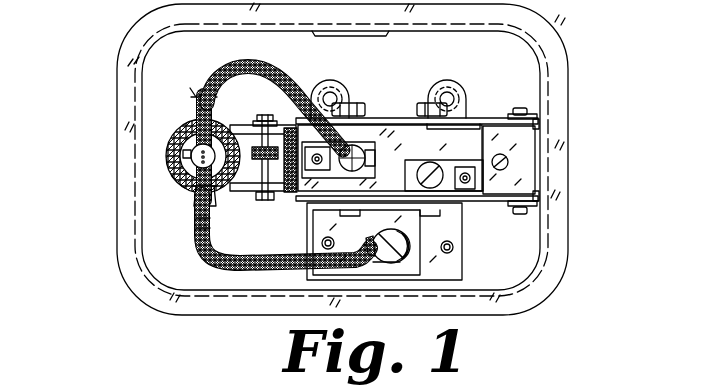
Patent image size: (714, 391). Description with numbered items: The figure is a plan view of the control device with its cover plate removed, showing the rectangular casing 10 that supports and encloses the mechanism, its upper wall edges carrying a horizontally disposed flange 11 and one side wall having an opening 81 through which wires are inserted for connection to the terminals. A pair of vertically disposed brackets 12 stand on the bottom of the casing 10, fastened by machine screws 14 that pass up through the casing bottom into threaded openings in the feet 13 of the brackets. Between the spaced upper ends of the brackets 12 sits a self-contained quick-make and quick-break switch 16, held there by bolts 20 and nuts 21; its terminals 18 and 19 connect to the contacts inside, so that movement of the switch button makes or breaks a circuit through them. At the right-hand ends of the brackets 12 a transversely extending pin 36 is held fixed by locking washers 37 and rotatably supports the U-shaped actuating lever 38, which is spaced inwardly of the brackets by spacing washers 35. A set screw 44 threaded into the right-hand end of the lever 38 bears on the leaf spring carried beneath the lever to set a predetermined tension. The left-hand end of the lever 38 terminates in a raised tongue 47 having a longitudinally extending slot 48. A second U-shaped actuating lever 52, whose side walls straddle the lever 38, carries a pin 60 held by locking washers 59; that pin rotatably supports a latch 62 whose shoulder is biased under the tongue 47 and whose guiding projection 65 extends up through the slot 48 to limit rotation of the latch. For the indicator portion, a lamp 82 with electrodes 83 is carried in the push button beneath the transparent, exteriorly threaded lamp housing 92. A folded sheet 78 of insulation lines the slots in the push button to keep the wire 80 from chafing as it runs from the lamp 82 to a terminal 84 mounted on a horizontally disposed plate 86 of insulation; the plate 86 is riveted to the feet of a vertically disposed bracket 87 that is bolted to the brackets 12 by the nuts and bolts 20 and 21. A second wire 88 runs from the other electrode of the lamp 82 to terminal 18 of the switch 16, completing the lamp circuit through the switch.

The casing 10 is at (192, 48).
The flange 11 is at (137, 52).
The brackets 12 is at (403, 118).
The feet 13 is at (328, 81).
The machine screws 14 is at (332, 98).
The switch 16 is at (373, 140).
The terminal 18 is at (358, 145).
The terminal 19 is at (445, 190).
The bolts 20 is at (335, 210).
The nuts 21 is at (347, 107).
The spacing washers 35 is at (537, 127).
The pin 36 is at (525, 110).
The locking washers 37 is at (535, 118).
The actuating lever 38 is at (520, 148).
The set screw 44 is at (507, 162).
The tongue 47 is at (195, 203).
The slot 48 is at (216, 230).
The second actuating lever 52 is at (255, 180).
The locking washers 59 is at (257, 122).
The pin 60 is at (183, 131).
The latch 62 is at (257, 212).
The guiding projection 65 is at (273, 157).
The sheet of insulation 78 is at (195, 101).
The wire 80 is at (195, 243).
The opening 81 is at (380, 33).
The lamp 82 is at (203, 152).
The electrodes 83 is at (198, 164).
The terminal 84 is at (392, 262).
The plate of insulation 86 is at (452, 258).
The bracket 87 is at (398, 208).
The second wire 88 is at (260, 72).
The lamp housing 92 is at (172, 181).